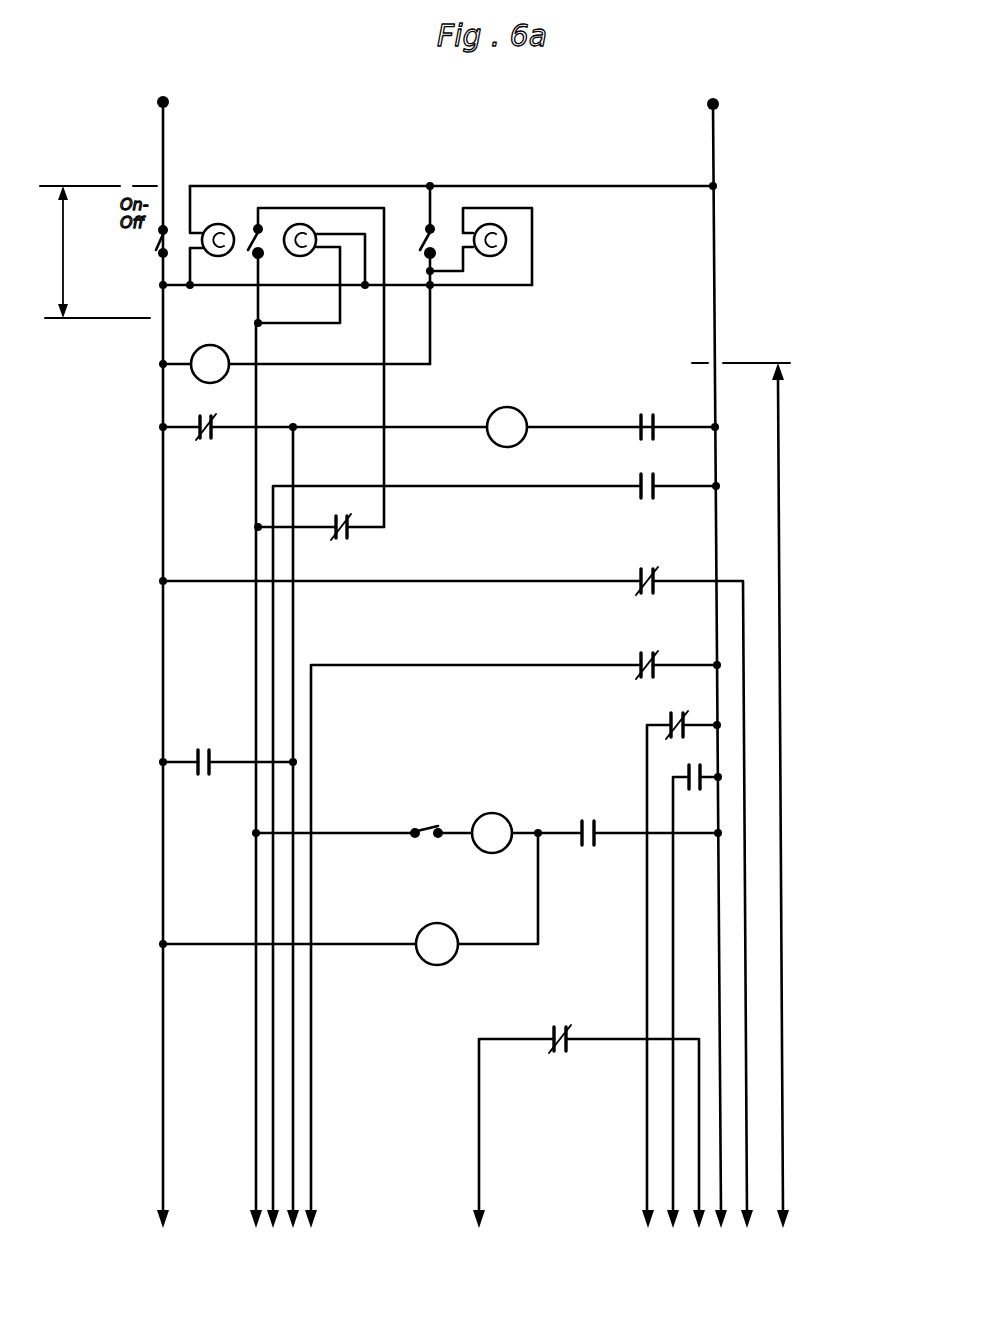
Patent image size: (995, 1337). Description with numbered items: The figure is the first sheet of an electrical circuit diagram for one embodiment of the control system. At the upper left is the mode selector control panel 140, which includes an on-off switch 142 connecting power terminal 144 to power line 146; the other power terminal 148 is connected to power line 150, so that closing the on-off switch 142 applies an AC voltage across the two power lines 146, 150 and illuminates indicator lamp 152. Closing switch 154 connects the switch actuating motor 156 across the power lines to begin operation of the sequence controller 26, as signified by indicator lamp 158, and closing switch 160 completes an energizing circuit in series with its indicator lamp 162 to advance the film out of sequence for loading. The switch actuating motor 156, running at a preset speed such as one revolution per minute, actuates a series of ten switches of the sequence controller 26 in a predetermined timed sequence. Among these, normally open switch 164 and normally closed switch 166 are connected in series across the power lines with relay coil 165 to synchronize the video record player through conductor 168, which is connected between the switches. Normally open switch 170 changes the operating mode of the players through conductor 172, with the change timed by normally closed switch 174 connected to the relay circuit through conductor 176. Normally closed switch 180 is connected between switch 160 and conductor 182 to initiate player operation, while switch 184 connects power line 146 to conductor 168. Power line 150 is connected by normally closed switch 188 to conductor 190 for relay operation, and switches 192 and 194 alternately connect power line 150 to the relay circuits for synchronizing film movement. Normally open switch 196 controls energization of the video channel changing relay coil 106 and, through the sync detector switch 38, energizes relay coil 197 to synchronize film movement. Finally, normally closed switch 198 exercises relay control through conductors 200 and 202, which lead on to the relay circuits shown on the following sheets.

The sequence controller 26 is at (853, 746).
The sync detector switch 38 is at (430, 816).
The video channel changing relay coil 106 is at (428, 966).
The mode selector control panel 140 is at (93, 252).
The on-off switch 142 is at (164, 232).
The power terminal 144 is at (163, 102).
The power line 146 is at (163, 675).
The power terminal 148 is at (713, 104).
The power line 150 is at (714, 240).
The indicator lamp 152 is at (218, 224).
The switch 154 is at (430, 240).
The switch actuating motor 156 is at (196, 351).
The indicator lamp 158 is at (507, 240).
The switch 160 is at (258, 240).
The indicator lamp 162 is at (302, 224).
The normally open switch 164 is at (641, 420).
The relay coil 165 is at (520, 412).
The normally closed switch 166 is at (214, 420).
The conductor 168 is at (293, 620).
The normally open switch 170 is at (641, 479).
The conductor 172 is at (480, 484).
The normally closed switch 174 is at (641, 575).
The conductor 176 is at (744, 618).
The normally closed switch 180 is at (348, 522).
The conductor 182 is at (256, 640).
The switch 184 is at (211, 770).
The normally closed switch 188 is at (641, 660).
The conductor 190 is at (311, 925).
The switch 192 is at (671, 720).
The switch 194 is at (686, 768).
The normally open switch 196 is at (596, 840).
The relay coil 197 is at (505, 848).
The normally closed switch 198 is at (566, 1046).
The conductor 200 is at (479, 1103).
The conductor 202 is at (699, 1150).